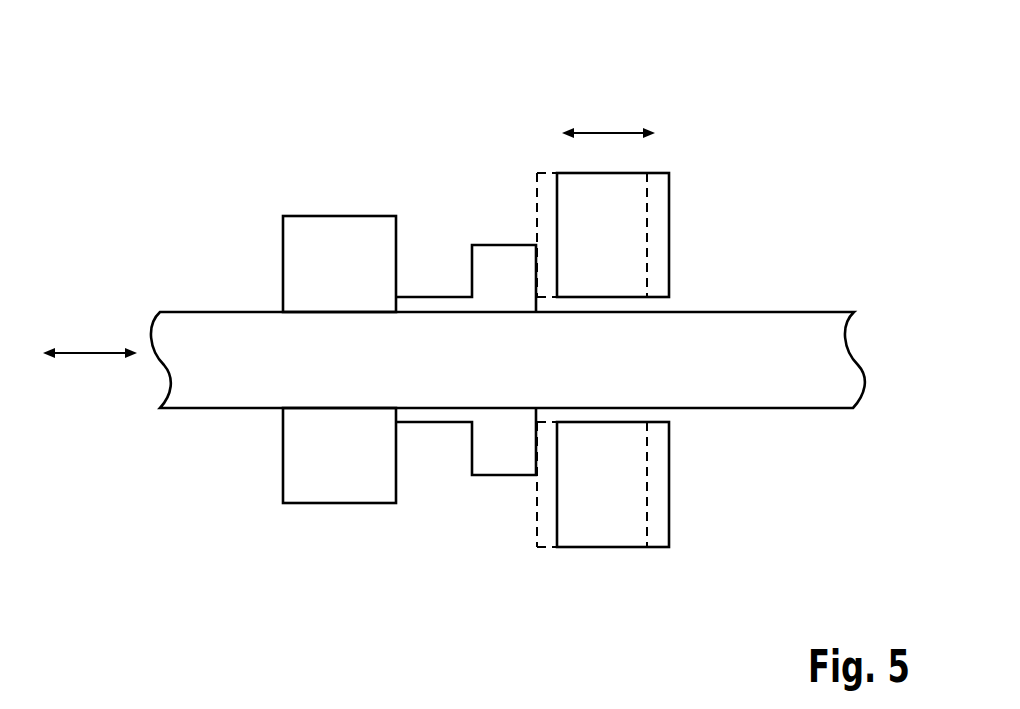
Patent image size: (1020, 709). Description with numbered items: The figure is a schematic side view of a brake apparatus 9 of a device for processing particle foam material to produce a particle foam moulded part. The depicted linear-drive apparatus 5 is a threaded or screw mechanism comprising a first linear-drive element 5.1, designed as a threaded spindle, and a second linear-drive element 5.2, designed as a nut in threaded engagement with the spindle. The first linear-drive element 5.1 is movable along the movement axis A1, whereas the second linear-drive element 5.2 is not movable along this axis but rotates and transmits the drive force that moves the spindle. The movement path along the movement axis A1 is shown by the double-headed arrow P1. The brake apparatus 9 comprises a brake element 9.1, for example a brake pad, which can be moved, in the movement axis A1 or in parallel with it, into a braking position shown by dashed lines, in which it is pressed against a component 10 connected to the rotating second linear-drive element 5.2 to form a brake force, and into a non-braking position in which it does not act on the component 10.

The linear-drive apparatus 5 is at (509, 338).
The first linear-drive element 5.1 is at (218, 392).
The second linear-drive element 5.2 is at (293, 260).
The brake apparatus 9 is at (652, 358).
The brake element 9.1 is at (658, 258).
The component 10 is at (508, 258).
The movement axis A1 is at (90, 352).
The double-headed arrow P1 is at (610, 130).